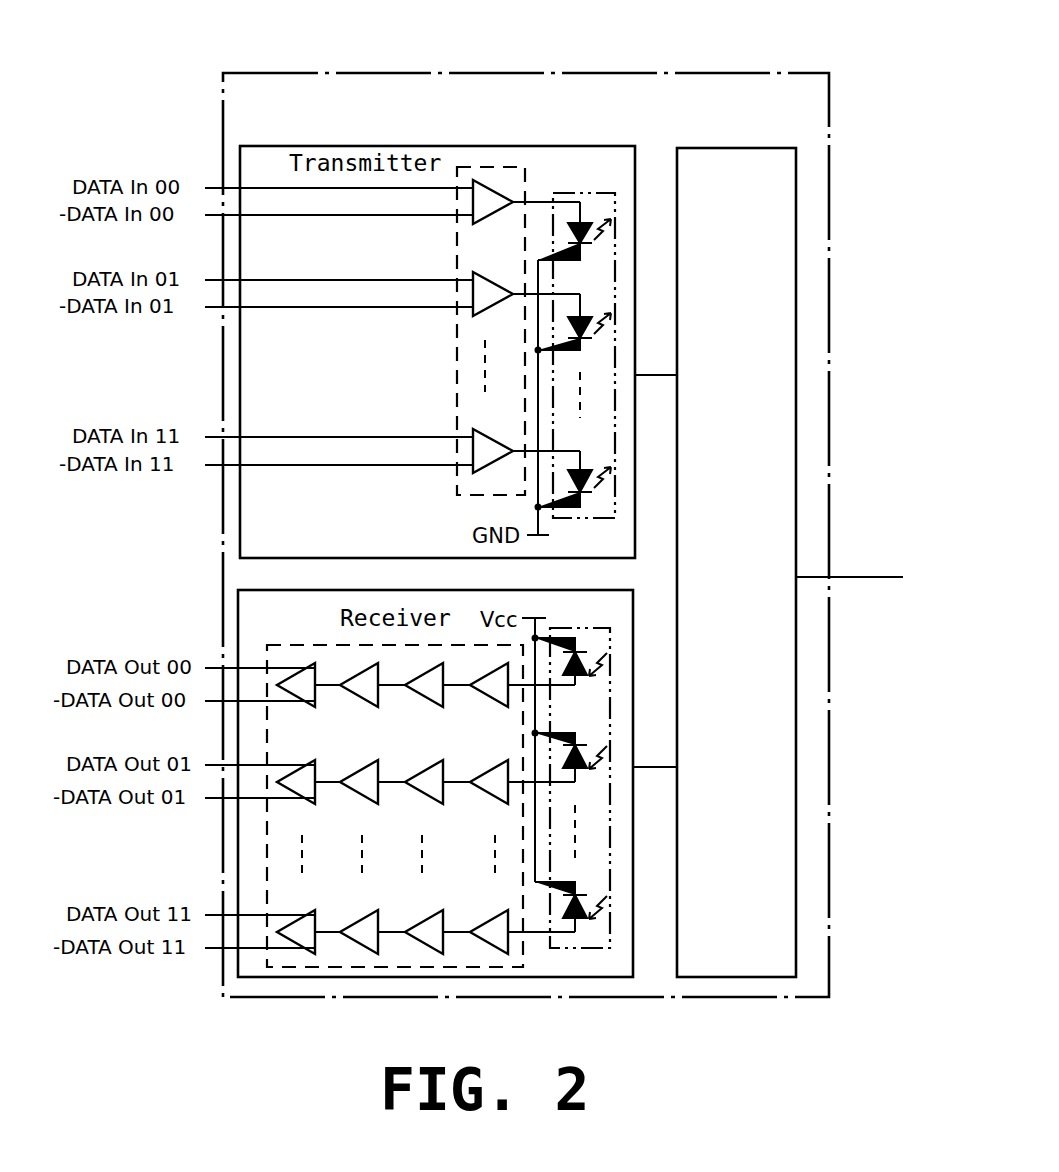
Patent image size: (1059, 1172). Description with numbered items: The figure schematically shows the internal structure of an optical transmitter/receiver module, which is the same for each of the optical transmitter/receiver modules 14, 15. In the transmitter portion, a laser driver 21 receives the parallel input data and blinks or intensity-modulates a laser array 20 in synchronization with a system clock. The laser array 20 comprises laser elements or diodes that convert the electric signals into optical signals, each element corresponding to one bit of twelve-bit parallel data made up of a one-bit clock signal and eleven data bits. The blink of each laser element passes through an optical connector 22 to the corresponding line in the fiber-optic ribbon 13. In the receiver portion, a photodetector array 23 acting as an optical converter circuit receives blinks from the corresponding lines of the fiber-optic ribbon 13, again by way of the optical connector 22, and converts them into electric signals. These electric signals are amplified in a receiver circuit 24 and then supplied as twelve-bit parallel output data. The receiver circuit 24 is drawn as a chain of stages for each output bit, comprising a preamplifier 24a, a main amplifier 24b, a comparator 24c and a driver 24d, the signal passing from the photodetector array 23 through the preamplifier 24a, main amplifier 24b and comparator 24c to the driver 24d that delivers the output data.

The fiber-optic ribbon 13 is at (860, 577).
The optical transmitter/receiver module 14 is at (316, 73).
The optical transmitter/receiver module 15 is at (526, 535).
The laser array 20 is at (560, 193).
The laser driver 21 is at (455, 366).
The optical connector 22 is at (756, 148).
The photodetector array 23 is at (558, 628).
The receiver circuit 24 is at (267, 650).
The preamplifier 24a is at (496, 706).
The main amplifier 24b is at (440, 706).
The comparator 24c is at (374, 706).
The driver 24d is at (310, 706).